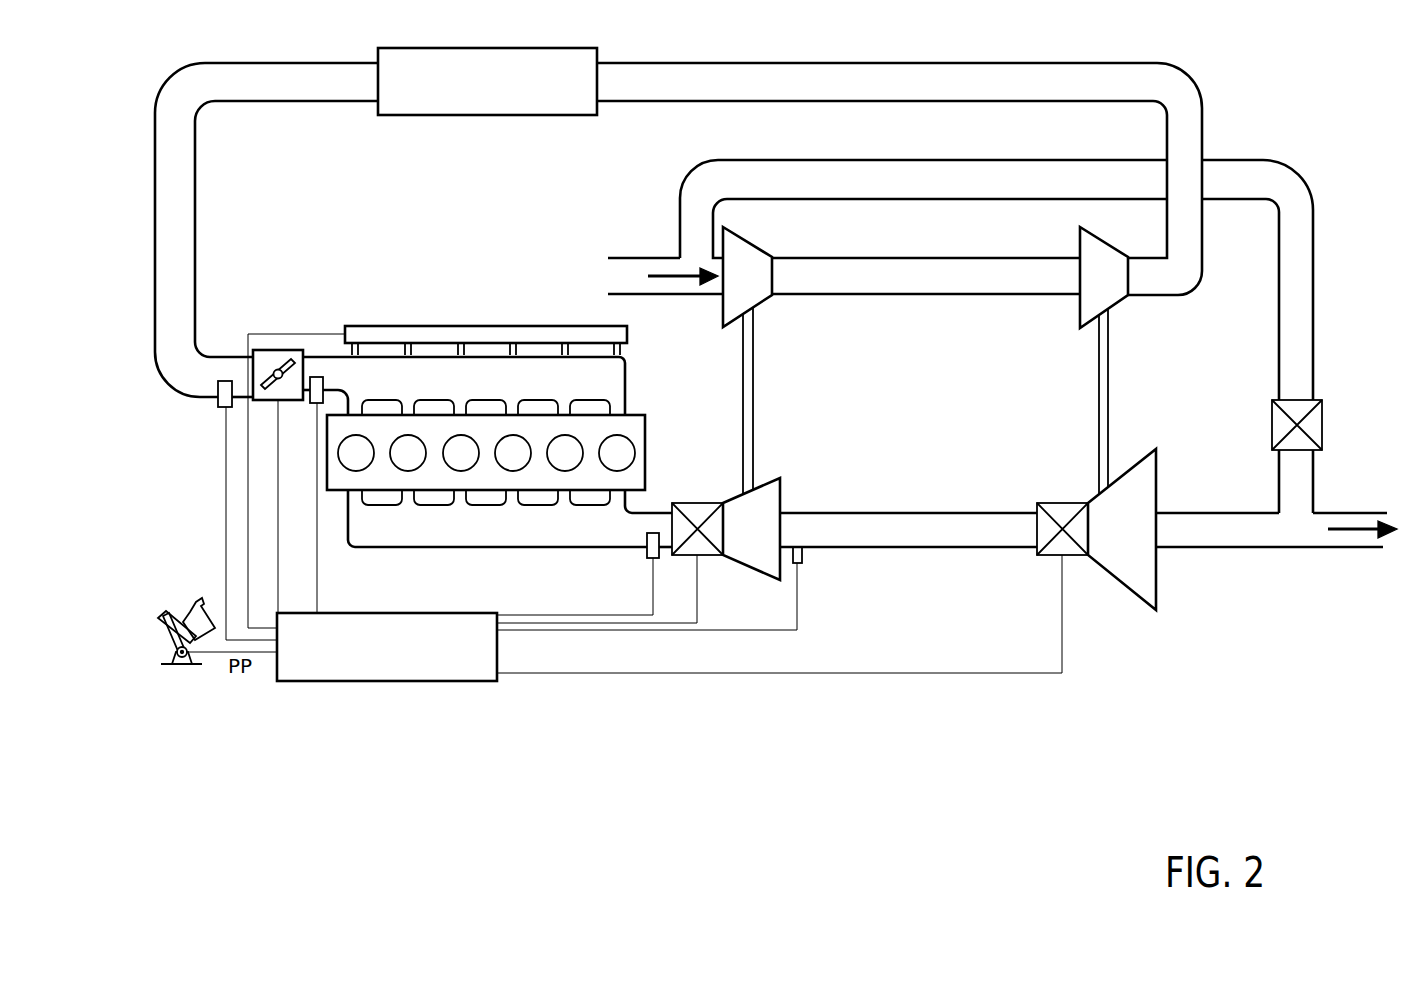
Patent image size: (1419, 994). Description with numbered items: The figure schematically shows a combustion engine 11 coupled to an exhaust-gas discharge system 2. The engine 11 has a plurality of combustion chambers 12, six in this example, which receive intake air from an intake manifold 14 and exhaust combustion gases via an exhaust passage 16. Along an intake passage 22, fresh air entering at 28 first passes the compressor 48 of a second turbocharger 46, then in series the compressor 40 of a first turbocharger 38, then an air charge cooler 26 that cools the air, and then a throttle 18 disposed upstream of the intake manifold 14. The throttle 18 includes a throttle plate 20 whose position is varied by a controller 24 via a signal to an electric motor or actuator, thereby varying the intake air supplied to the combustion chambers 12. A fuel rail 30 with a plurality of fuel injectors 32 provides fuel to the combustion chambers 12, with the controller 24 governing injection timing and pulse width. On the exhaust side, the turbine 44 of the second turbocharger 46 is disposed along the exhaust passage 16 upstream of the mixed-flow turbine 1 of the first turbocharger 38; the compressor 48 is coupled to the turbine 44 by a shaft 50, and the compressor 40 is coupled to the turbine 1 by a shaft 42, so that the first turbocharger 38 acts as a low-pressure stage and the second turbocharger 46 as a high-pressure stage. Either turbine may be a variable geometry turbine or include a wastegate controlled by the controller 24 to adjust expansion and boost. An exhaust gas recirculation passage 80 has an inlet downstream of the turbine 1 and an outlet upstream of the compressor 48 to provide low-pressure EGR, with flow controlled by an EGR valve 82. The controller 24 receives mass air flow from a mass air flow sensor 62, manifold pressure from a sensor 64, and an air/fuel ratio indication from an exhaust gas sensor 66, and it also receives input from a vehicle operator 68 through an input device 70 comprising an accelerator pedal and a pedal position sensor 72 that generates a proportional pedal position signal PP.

The mixed-flow turbine 1 is at (1096, 529).
The exhaust-gas discharge system 2 is at (582, 573).
The combustion engine 11 is at (483, 262).
The combustion chambers 12 is at (486, 452).
The intake manifold 14 is at (464, 386).
The exhaust passage 16 is at (510, 518).
The throttle 18 is at (250, 378).
The throttle plate 20 is at (287, 362).
The intake passage 22 is at (196, 200).
The controller 24 is at (487, 618).
The air charge cooler 26 is at (487, 81).
The fresh air entry 28 is at (665, 276).
The fuel rail 30 is at (585, 325).
The fuel injectors 32 is at (620, 351).
The first turbocharger 38 is at (1067, 418).
The compressor 40 is at (1104, 277).
The shaft 42 is at (1110, 453).
The turbine 44 is at (726, 529).
The second turbocharger 46 is at (787, 420).
The compressor 48 is at (747, 277).
The shaft 50 is at (742, 447).
The mass air flow sensor 62 is at (203, 420).
The manifold pressure sensor 64 is at (314, 405).
The exhaust gas sensor 66 is at (650, 560).
The vehicle operator 68 is at (190, 607).
The input device 70 is at (160, 622).
The pedal position sensor 72 is at (176, 648).
The exhaust gas recirculation passage 80 is at (1313, 290).
The EGR valve 82 is at (1322, 425).